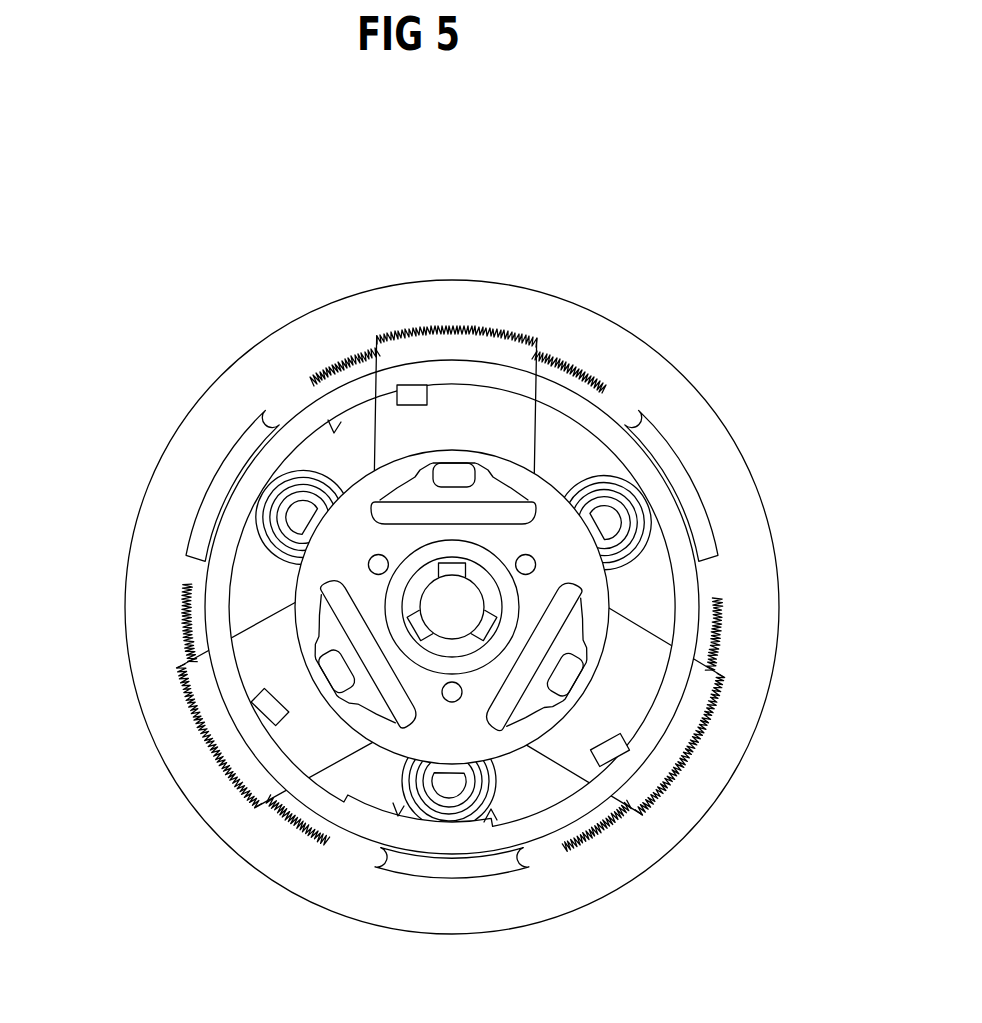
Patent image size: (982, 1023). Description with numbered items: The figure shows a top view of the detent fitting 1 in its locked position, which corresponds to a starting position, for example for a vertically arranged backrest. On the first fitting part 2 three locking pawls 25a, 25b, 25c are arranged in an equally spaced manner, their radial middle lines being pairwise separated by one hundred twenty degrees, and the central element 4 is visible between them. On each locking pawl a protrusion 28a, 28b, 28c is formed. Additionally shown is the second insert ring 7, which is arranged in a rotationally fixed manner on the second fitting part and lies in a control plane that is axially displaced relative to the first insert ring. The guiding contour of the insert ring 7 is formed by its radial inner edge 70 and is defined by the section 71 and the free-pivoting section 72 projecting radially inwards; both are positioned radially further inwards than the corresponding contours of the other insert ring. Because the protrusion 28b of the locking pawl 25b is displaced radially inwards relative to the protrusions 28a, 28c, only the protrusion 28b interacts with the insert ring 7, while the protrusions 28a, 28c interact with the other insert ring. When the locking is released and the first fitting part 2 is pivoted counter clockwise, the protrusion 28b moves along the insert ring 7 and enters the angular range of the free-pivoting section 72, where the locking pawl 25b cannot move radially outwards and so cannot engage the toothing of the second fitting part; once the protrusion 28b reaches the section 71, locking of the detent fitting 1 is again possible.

The detent fitting 1 is at (140, 377).
The first fitting part 2 is at (728, 473).
The hub plate 4 is at (553, 529).
The insert ring 7 is at (598, 424).
The locking pawl 25a is at (472, 355).
The locking pawl 25b is at (270, 783).
The locking pawl 25c is at (686, 720).
The protrusion 28a is at (405, 394).
The protrusion 28b is at (265, 698).
The protrusion 28c is at (608, 757).
The radial inner edge 70 is at (394, 796).
The section 71 is at (333, 428).
The free-pivoting section 72 is at (513, 806).